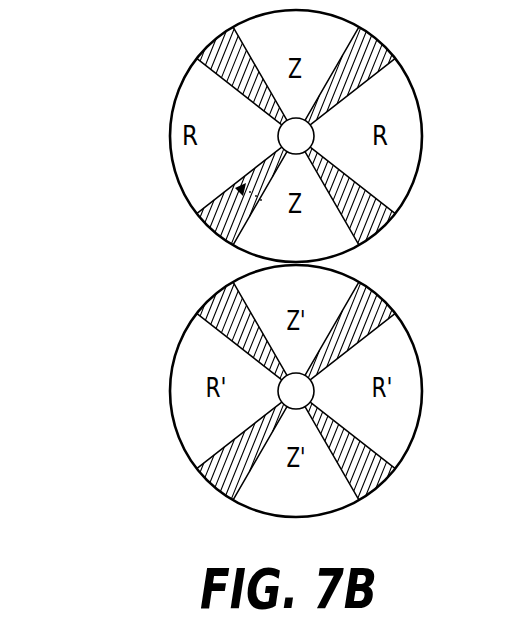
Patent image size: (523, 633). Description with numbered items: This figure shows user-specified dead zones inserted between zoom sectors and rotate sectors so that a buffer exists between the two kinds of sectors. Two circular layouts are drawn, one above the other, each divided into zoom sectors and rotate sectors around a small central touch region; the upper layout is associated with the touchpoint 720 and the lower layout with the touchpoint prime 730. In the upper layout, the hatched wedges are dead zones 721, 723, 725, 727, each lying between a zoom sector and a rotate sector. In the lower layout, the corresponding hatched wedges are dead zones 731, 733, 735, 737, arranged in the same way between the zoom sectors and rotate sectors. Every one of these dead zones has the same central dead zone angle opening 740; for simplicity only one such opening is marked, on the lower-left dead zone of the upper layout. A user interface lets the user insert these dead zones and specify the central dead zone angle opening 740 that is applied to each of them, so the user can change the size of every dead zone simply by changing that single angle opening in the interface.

The touchpoint 720 is at (295, 135).
The dead zone 721 is at (214, 38).
The dead zone 723 is at (379, 40).
The dead zone 725 is at (213, 235).
The dead zone 727 is at (380, 230).
The central dead zone angle opening 740 is at (236, 187).
The touchpoint prime 730 is at (297, 390).
The dead zone 731 is at (214, 292).
The dead zone 733 is at (391, 303).
The dead zone 735 is at (213, 487).
The dead zone 737 is at (380, 485).